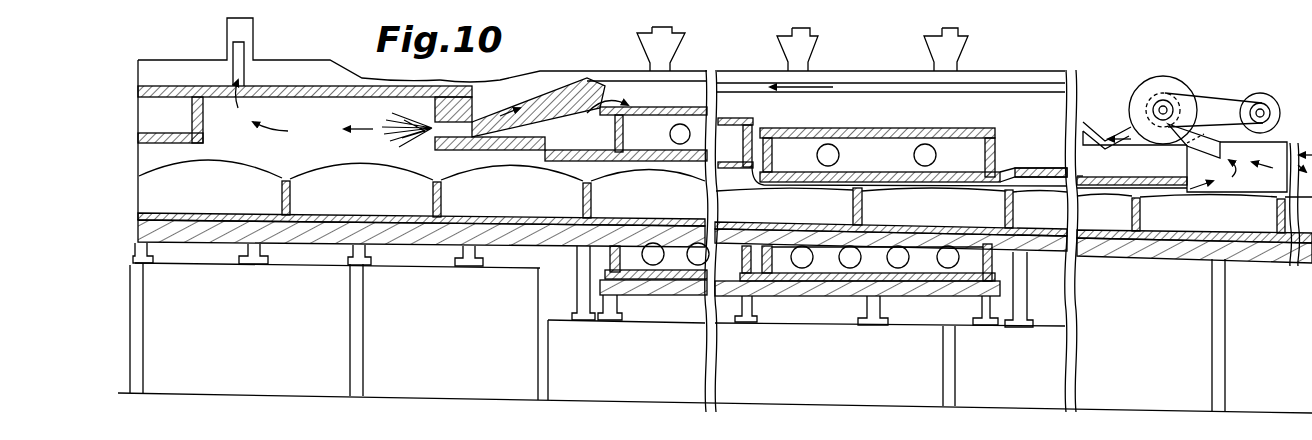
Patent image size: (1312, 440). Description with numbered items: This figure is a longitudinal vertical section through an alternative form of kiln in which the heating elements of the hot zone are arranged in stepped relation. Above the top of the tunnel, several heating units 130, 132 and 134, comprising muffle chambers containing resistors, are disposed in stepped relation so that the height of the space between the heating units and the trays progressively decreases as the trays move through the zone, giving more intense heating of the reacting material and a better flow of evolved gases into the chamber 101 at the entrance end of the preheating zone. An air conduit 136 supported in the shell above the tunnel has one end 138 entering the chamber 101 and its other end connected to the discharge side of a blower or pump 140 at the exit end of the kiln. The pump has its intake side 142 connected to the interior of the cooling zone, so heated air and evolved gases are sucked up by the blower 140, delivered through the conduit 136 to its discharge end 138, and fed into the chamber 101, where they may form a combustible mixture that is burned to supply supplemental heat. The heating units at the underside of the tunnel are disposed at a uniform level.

The chamber 101 is at (279, 108).
The heating unit 130 is at (958, 129).
The heating unit 132 is at (742, 113).
The heating unit 134 is at (612, 121).
The air conduit 136 is at (565, 90).
The discharge end of the air conduit 138 is at (484, 113).
The blower or pump 140 is at (1170, 87).
The intake side of the pump 142 is at (1201, 130).